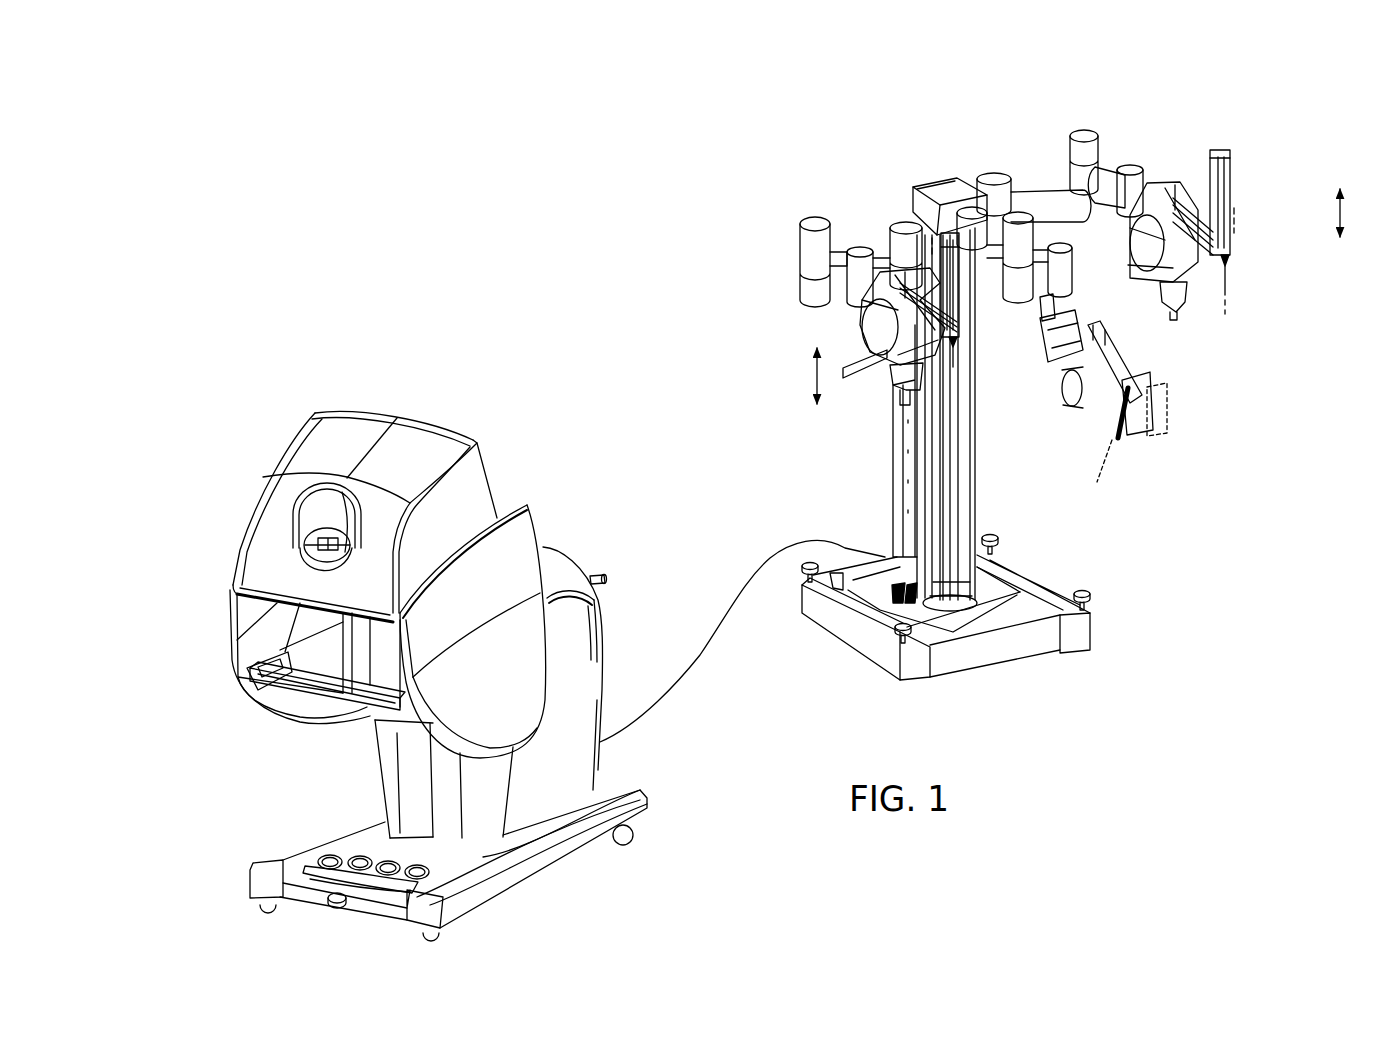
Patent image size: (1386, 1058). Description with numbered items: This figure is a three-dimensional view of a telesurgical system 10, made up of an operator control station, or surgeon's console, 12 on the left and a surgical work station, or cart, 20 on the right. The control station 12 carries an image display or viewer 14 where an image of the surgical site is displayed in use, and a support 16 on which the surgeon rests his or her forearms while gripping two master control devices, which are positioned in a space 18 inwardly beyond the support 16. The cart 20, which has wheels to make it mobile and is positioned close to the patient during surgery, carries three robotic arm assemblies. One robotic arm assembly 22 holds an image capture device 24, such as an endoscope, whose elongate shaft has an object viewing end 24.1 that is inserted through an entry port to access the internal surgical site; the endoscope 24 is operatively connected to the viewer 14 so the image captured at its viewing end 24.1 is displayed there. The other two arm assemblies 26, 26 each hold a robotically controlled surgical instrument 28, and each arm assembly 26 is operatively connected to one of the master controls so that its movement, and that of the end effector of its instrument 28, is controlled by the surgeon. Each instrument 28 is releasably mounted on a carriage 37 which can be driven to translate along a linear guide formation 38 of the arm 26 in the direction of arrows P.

The telesurgical system 10 is at (631, 212).
The control station 12 is at (430, 388).
The viewer 14 is at (313, 532).
The support 16 is at (303, 688).
The space 18 is at (335, 664).
The cart 20 is at (938, 153).
The robotic arm assembly 22 is at (1040, 390).
The image capture device 24 is at (1153, 407).
The object viewing end 24.1 is at (1100, 487).
The robotic arm assembly 26 is at (823, 327).
The surgical instrument 28 is at (973, 298).
The carriage 37 is at (925, 260).
The linear guide formation 38 is at (922, 228).
The arrows P is at (817, 372).